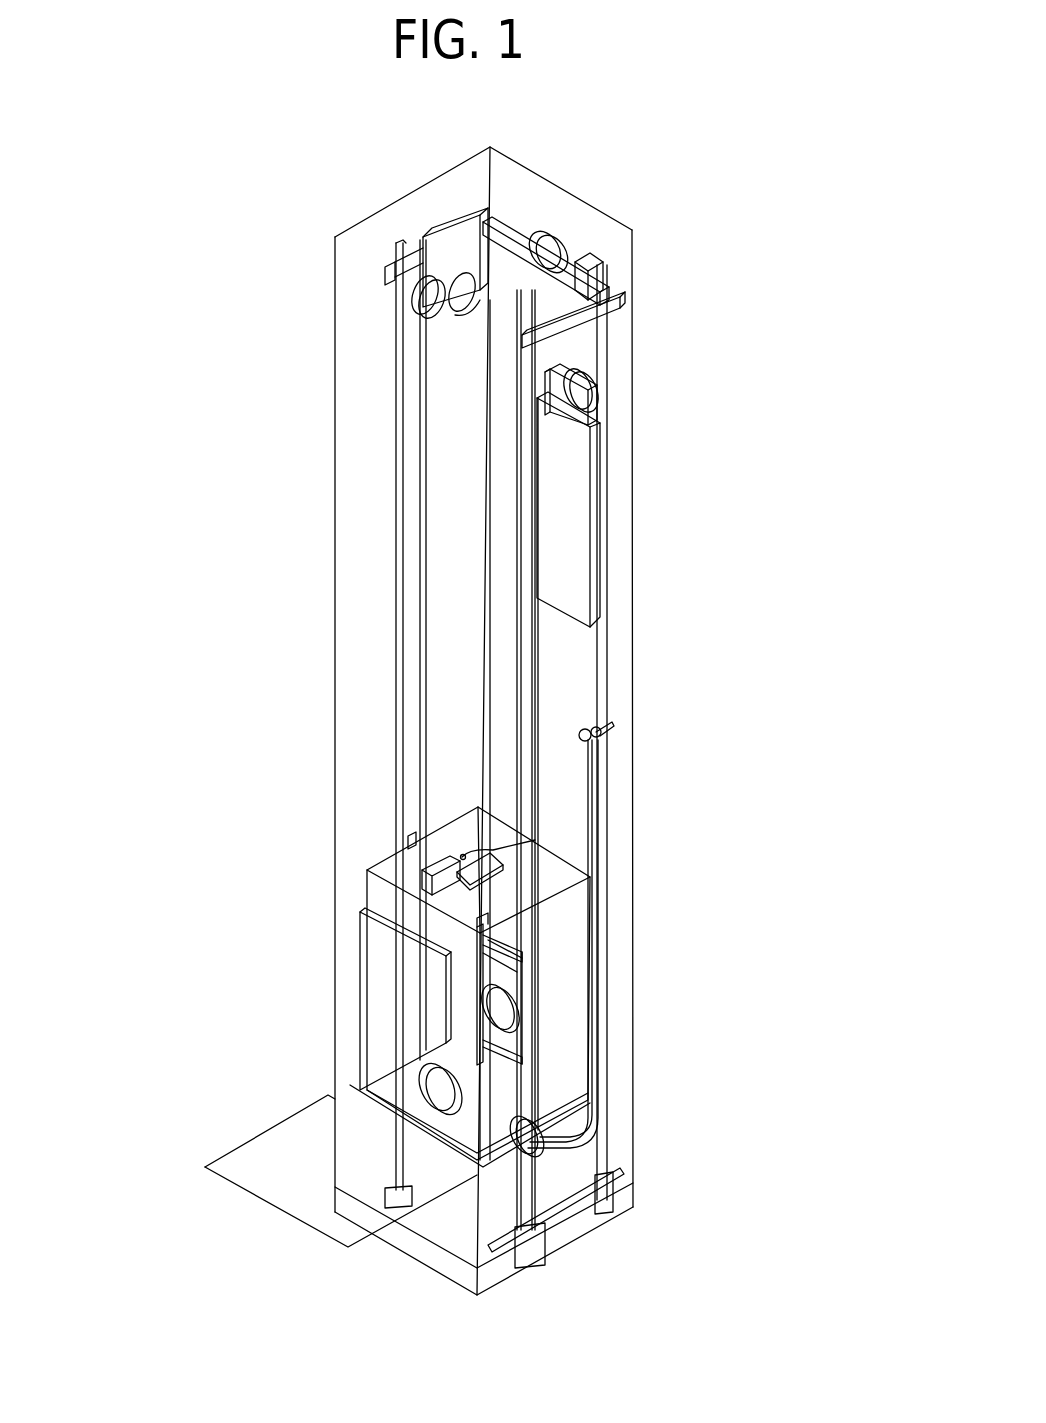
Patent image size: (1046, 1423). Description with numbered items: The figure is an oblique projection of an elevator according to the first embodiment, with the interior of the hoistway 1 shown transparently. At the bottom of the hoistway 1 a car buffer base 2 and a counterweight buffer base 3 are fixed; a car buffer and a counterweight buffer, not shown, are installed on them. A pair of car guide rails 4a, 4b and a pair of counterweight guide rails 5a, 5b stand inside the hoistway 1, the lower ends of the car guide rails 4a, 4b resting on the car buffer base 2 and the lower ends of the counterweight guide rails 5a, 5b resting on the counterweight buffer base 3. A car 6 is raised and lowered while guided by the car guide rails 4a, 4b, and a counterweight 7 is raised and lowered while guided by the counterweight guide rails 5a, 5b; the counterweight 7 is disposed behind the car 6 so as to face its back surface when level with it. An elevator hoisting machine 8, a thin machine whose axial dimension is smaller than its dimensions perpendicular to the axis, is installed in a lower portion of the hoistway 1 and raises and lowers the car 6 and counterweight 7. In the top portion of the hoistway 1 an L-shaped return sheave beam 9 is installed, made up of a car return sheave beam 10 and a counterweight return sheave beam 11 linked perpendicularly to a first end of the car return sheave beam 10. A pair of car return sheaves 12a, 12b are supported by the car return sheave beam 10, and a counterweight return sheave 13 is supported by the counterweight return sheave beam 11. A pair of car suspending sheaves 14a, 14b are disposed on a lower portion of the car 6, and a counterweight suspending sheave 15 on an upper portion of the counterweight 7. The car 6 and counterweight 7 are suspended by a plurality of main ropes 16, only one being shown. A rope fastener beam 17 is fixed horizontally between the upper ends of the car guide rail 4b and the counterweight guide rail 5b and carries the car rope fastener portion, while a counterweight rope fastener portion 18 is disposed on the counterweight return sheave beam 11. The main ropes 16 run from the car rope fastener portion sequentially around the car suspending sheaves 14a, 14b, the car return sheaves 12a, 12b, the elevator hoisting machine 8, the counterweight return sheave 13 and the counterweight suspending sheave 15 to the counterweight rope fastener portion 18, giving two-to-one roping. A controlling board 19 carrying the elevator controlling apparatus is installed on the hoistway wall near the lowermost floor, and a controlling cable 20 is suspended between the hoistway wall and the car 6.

The hoistway 1 is at (636, 430).
The car buffer base 2 is at (457, 1232).
The counterweight buffer base 3 is at (563, 1203).
The car guide rail 4a is at (392, 613).
The car guide rail 4b is at (528, 524).
The counterweight guide rail 5a is at (540, 688).
The counterweight guide rail 5b is at (612, 712).
The car 6 is at (367, 885).
The counterweight 7 is at (577, 571).
The elevator hoisting machine 8 is at (508, 968).
The return sheave beam 9 is at (484, 212).
The car return sheave beam 10 is at (392, 262).
The counterweight return sheave beam 11 is at (515, 236).
The car return sheave 12a is at (432, 318).
The car return sheave 12b is at (468, 300).
The counterweight return sheave 13 is at (548, 242).
The car suspending sheave 14a is at (540, 1148).
The car suspending sheave 14b is at (413, 1082).
The counterweight suspending sheave 15 is at (595, 392).
The main rope 16 is at (422, 531).
The rope fastener beam 17 is at (614, 340).
The counterweight rope fastener portion 18 is at (600, 262).
The controlling board 19 is at (420, 921).
The controlling cable 20 is at (604, 1133).